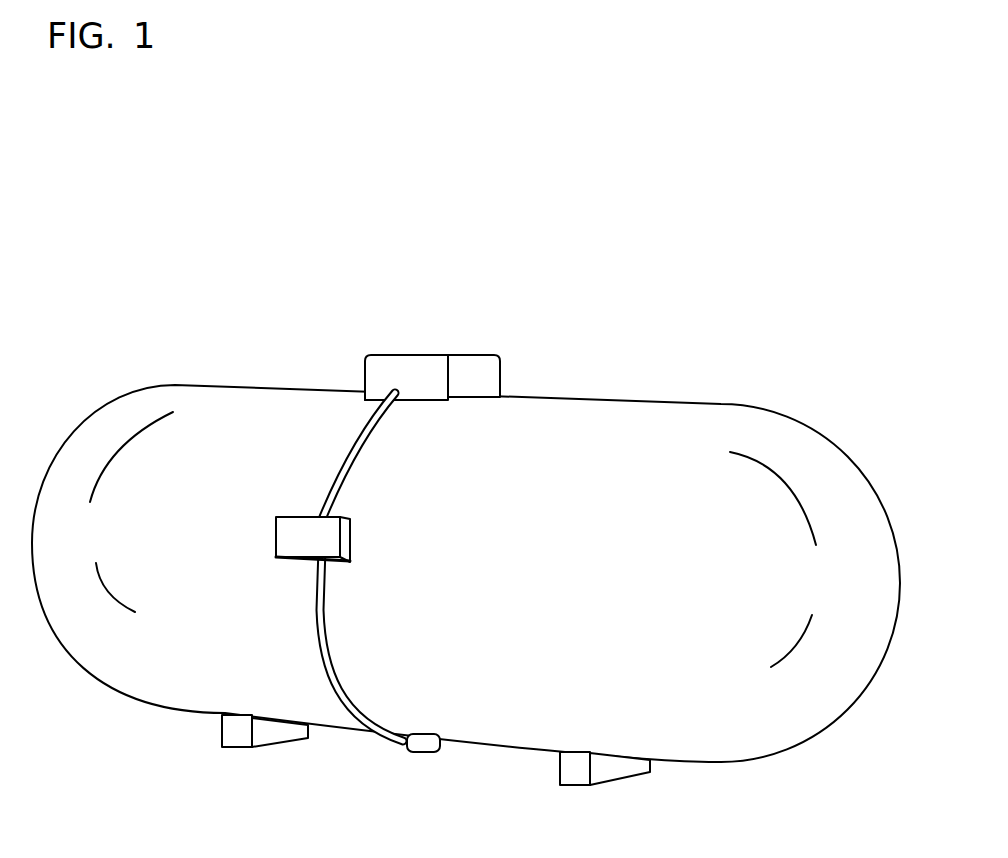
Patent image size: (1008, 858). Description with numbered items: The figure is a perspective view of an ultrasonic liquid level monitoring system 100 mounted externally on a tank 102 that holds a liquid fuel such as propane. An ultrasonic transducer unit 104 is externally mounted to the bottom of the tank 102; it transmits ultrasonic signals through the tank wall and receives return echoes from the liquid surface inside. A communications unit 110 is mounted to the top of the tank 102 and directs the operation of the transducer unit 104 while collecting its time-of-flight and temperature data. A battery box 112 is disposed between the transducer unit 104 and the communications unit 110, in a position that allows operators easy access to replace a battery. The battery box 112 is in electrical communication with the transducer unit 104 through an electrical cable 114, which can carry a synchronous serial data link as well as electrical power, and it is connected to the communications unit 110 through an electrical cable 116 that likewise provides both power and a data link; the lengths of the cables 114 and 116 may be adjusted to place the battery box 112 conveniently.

The ultrasonic liquid level monitoring system 100 is at (182, 255).
The tank 102 is at (600, 564).
The ultrasonic transducer unit 104 is at (419, 762).
The communications unit 110 is at (427, 345).
The battery box 112 is at (345, 515).
The electrical cable 114 is at (345, 713).
The electrical cable 116 is at (360, 430).